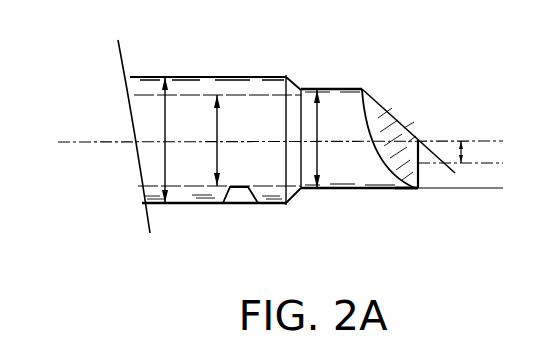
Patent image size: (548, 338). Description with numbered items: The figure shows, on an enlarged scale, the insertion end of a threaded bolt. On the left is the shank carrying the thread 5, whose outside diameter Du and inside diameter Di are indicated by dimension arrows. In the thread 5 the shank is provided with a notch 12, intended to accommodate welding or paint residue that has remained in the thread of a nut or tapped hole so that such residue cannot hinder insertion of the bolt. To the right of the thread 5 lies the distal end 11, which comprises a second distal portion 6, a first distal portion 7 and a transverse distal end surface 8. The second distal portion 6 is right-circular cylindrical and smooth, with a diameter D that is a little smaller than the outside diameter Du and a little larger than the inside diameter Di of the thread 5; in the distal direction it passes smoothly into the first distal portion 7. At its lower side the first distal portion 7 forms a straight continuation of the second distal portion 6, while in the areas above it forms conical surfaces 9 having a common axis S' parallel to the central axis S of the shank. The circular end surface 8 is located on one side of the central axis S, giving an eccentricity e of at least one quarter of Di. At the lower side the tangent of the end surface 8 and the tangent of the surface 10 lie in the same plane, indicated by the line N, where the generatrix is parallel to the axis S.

The thread 5 is at (182, 206).
The notch 12 is at (267, 206).
The distal end 11 is at (398, 43).
The second distal portion 6 is at (308, 220).
The first distal portion 7 is at (357, 220).
The conical surfaces 9 is at (406, 120).
The transverse distal end surface 8 is at (421, 176).
The surface 10 is at (387, 189).
The central axis S is at (287, 142).
The common axis of the conical surfaces S' is at (470, 164).
The reference line N is at (468, 189).
The outside diameter of the thread Du is at (180, 140).
The inside diameter of the thread Di is at (228, 140).
The diameter of the second distal portion D is at (328, 139).
The eccentricity e is at (468, 153).